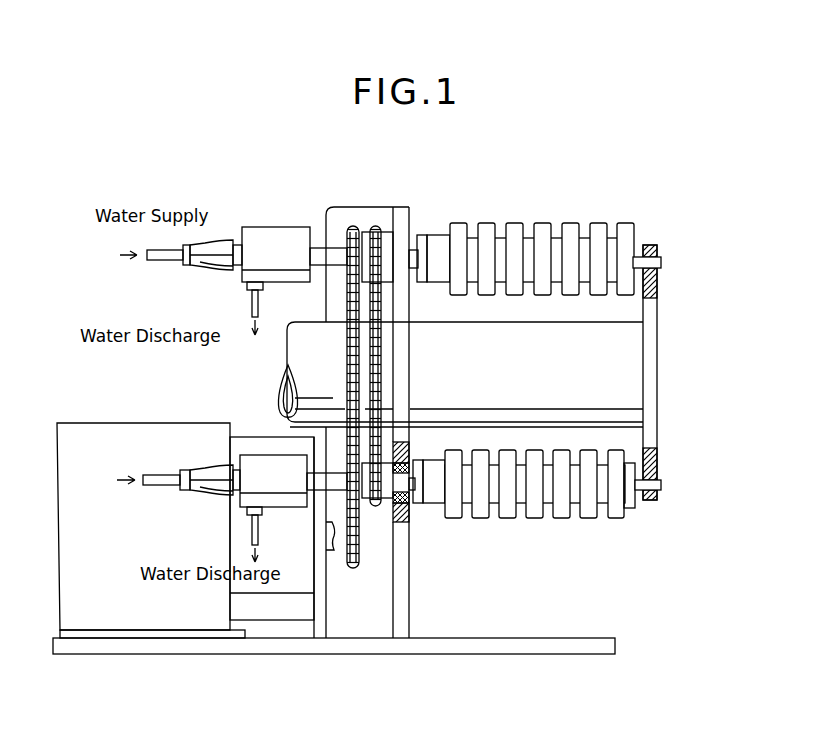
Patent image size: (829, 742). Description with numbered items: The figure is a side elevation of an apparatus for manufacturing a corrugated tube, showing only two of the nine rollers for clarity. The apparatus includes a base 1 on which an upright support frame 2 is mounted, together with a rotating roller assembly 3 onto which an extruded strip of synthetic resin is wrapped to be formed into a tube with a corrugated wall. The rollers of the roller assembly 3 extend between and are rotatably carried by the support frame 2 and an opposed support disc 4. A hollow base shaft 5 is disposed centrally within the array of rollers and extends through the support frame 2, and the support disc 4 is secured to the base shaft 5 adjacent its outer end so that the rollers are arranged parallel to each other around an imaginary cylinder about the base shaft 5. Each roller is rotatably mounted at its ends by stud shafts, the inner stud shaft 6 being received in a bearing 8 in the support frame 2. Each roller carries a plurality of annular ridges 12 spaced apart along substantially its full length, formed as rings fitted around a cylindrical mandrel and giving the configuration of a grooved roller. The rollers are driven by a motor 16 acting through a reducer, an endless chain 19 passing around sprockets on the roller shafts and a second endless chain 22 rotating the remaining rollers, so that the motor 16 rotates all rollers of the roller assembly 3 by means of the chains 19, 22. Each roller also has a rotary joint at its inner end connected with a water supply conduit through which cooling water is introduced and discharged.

The base 1 is at (372, 656).
The support frame 2 is at (409, 600).
The roller assembly 3 is at (542, 207).
The support disc 4 is at (658, 370).
The base shaft 5 is at (630, 341).
The stud shaft 6 is at (397, 492).
The bearing 8 is at (408, 505).
The annular ridges 12 is at (487, 519).
The motor 16 is at (158, 423).
The endless chain 19 is at (378, 226).
The second endless chain 22 is at (355, 226).